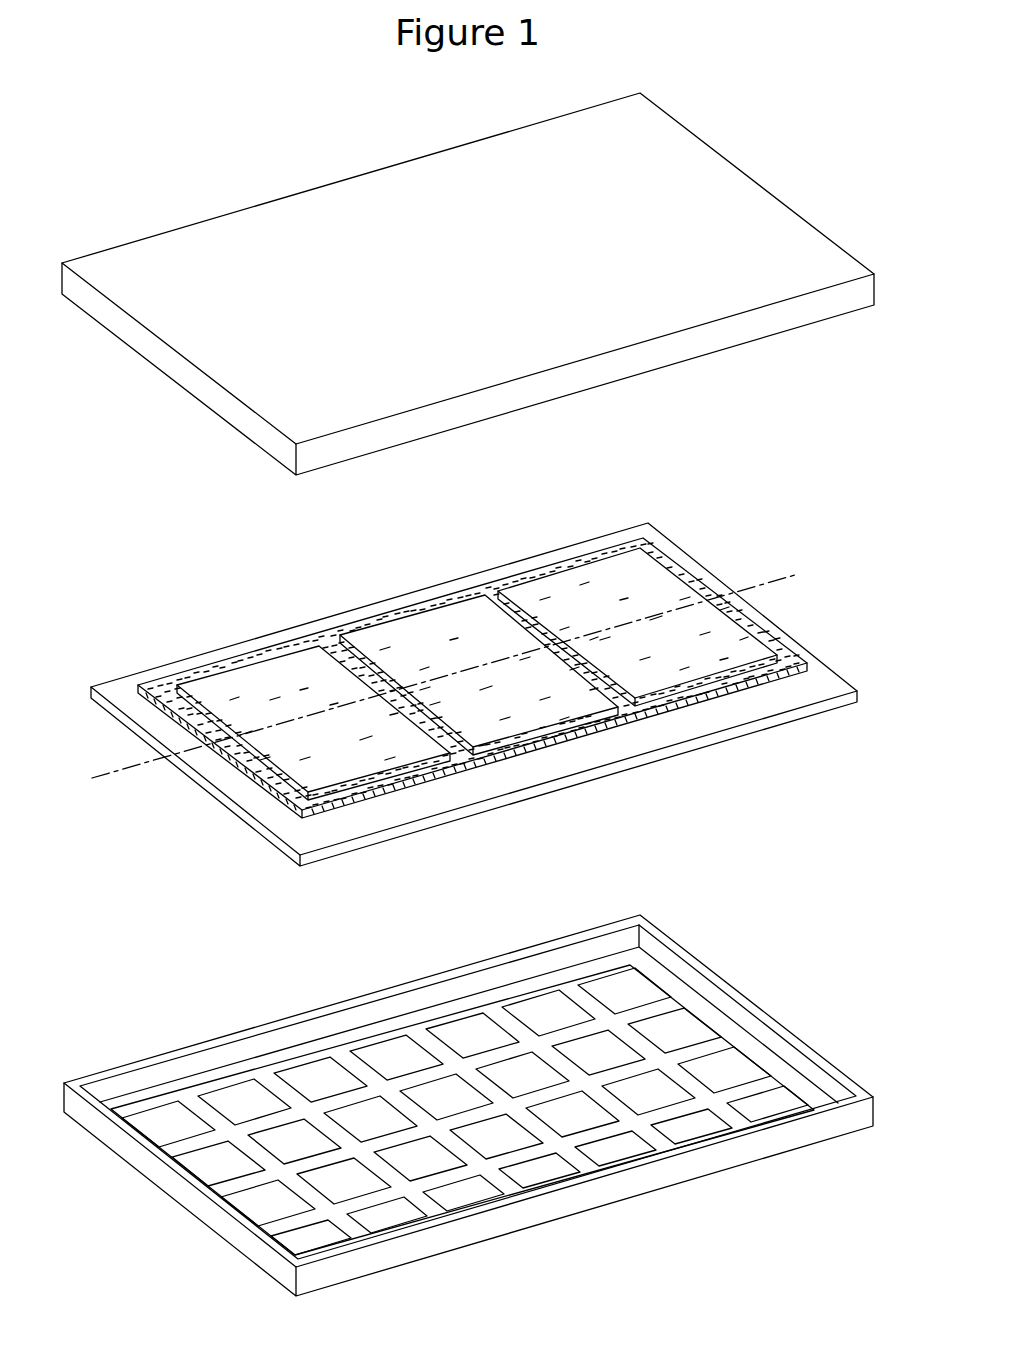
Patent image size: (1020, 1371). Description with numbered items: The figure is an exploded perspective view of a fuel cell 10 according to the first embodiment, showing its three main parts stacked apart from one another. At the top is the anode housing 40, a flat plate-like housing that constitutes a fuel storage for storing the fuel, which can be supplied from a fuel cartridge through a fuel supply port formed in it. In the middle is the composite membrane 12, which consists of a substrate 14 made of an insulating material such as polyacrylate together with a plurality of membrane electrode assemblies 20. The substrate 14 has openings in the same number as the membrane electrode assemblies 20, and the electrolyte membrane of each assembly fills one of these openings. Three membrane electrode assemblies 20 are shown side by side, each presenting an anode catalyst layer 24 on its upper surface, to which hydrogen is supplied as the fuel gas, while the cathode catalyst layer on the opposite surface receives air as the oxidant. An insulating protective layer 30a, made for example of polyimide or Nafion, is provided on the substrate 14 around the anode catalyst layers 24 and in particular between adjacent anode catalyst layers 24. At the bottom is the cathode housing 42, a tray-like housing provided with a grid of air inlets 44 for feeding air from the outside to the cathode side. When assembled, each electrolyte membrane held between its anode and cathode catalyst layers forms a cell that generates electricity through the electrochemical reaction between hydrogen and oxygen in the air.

The fuel cell 10 is at (479, 1320).
The composite membrane 12 is at (262, 836).
The substrate 14 is at (120, 692).
The membrane electrode assembly 20 is at (247, 662).
The anode catalyst layer 24 is at (683, 657).
The insulating protective layer 30a is at (787, 668).
The anode housing 40 is at (752, 193).
The cathode housing 42 is at (469, 1105).
The air inlets 44 is at (688, 1030).